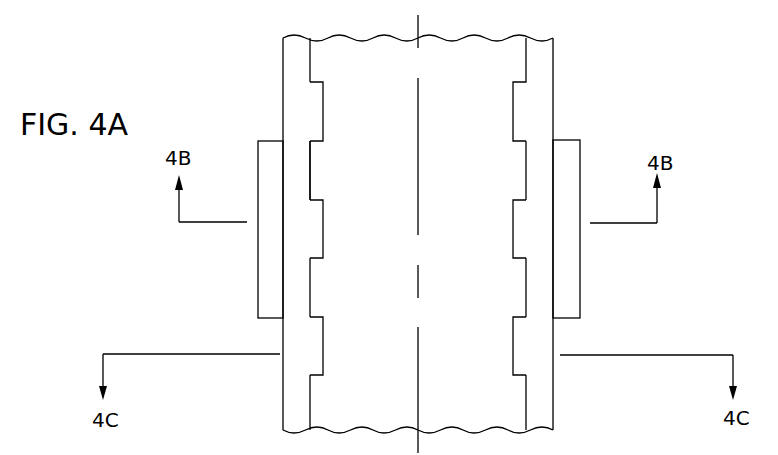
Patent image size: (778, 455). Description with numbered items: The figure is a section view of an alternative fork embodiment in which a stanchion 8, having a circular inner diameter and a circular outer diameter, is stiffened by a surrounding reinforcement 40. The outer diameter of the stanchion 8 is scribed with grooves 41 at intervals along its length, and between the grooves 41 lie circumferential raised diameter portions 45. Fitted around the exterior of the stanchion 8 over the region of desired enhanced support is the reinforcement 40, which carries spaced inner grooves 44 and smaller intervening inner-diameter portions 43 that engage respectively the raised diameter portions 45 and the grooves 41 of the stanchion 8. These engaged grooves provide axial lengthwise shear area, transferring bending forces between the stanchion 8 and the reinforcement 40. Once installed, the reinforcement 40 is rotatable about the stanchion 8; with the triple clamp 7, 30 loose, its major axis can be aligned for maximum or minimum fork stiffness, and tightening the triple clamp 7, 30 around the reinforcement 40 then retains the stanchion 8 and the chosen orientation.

The reinforcement 40 is at (535, 114).
The grooves 41 is at (517, 218).
The intervening ID portions 43 is at (327, 107).
The inner grooves 44 is at (313, 167).
The raised diameter portions 45 is at (528, 273).
The triple clamp 30 is at (273, 297).
The triple clamp 7 is at (570, 308).
The stanchion 8 is at (352, 412).